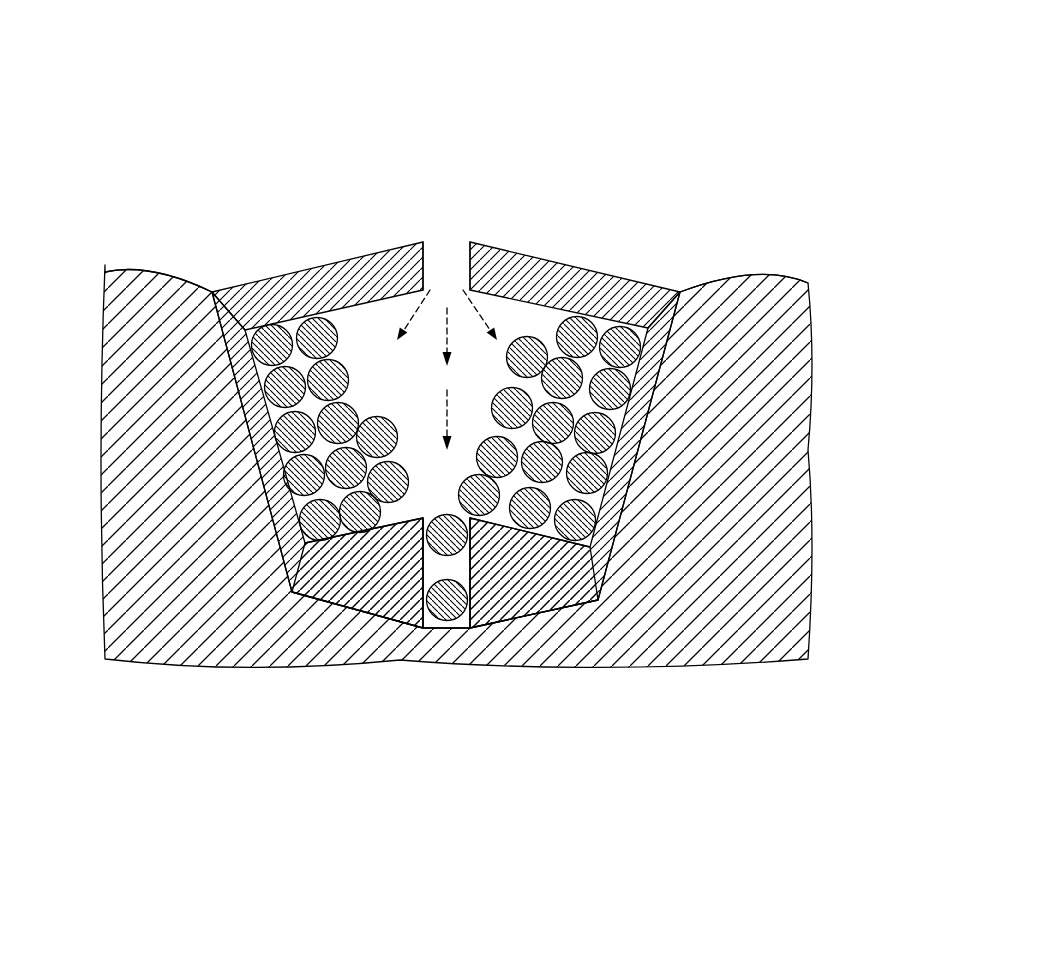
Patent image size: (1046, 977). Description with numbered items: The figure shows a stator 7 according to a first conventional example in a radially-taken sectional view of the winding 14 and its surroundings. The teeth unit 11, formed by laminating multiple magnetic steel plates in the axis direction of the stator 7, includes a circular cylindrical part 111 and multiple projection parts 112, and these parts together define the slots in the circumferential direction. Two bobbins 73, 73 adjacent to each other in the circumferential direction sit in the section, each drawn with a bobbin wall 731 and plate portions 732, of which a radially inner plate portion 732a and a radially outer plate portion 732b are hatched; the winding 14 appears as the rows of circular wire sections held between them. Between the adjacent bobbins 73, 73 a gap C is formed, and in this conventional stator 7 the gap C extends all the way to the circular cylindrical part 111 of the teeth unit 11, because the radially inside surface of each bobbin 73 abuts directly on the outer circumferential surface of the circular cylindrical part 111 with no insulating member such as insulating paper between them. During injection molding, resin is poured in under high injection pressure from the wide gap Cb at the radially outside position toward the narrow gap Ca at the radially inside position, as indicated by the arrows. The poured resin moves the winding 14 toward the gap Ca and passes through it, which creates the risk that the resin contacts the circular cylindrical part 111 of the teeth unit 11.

The stator 7 is at (665, 97).
The teeth unit 11 is at (835, 184).
The circular cylindrical part 111 is at (698, 637).
The projection parts 112 is at (725, 307).
The winding 14 is at (273, 334).
The bobbin 73 is at (250, 175).
The holder wall 731 is at (257, 455).
The plate 732 is at (446, 455).
The lower plate 732a is at (333, 575).
The upper plate 732b is at (343, 273).
The gap C is at (447, 226).
The gap at radially inside position Ca is at (461, 622).
The gap at radially outside position Cb is at (463, 252).